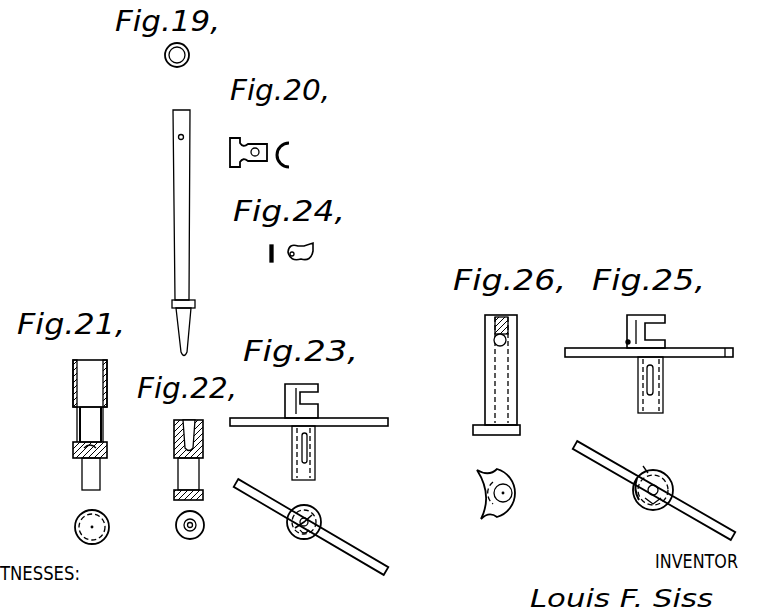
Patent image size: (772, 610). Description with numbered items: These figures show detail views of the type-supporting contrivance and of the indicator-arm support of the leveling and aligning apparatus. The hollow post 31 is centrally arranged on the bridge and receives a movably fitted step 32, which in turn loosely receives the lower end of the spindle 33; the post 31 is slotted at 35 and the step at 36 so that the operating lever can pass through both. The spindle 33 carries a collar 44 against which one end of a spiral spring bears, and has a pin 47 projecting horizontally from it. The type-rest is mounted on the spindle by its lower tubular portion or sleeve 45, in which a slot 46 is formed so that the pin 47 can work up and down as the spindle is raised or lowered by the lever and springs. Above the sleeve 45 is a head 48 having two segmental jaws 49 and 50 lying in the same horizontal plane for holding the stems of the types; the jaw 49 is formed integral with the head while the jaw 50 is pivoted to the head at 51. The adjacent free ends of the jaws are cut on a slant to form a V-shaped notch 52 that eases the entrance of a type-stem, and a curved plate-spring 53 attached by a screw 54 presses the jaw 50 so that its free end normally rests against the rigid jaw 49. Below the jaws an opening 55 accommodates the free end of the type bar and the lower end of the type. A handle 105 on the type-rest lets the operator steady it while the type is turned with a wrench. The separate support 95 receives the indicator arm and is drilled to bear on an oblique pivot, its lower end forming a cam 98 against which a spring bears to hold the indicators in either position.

In FIG. 21, the hollow post 31 is at (72, 393).
In FIG. 22, the step 32 is at (173, 448).
In FIG. 19, the spindle 33 is at (171, 238).
In FIG. 21, the slot 35 is at (79, 428).
In FIG. 22, the slot 36 is at (176, 479).
In FIG. 19, the collar 44 is at (171, 305).
In FIG. 23, the tubular portion 45 is at (316, 477).
In FIG. 25, the tubular portion 45 is at (664, 403).
In FIG. 23, the slot 46 is at (308, 440).
In FIG. 19, the pin 47 is at (178, 138).
In FIG. 23, the head 48 is at (286, 401).
In FIG. 23, the jaw 49 is at (318, 512).
In FIG. 25, the jaw 49 is at (668, 477).
In FIG. 24, the jaw 50 is at (291, 261).
In FIG. 25, the jaw 50 is at (654, 508).
In FIG. 23, the pivot 51 is at (300, 536).
In FIG. 25, the pivot 51 is at (640, 500).
In FIG. 25, the V-shaped notch 52 is at (667, 490).
In FIG. 20, the curved plate-spring 53 is at (259, 160).
In FIG. 25, the curved plate-spring 53 is at (631, 322).
In FIG. 25, the screw 54 is at (624, 342).
In FIG. 23, the opening 55 is at (306, 396).
In FIG. 26, the support 95 is at (517, 367).
In FIG. 26, the cam 98 is at (467, 503).
In FIG. 23, the handle 105 is at (380, 558).
In FIG. 25, the handle 105 is at (700, 357).